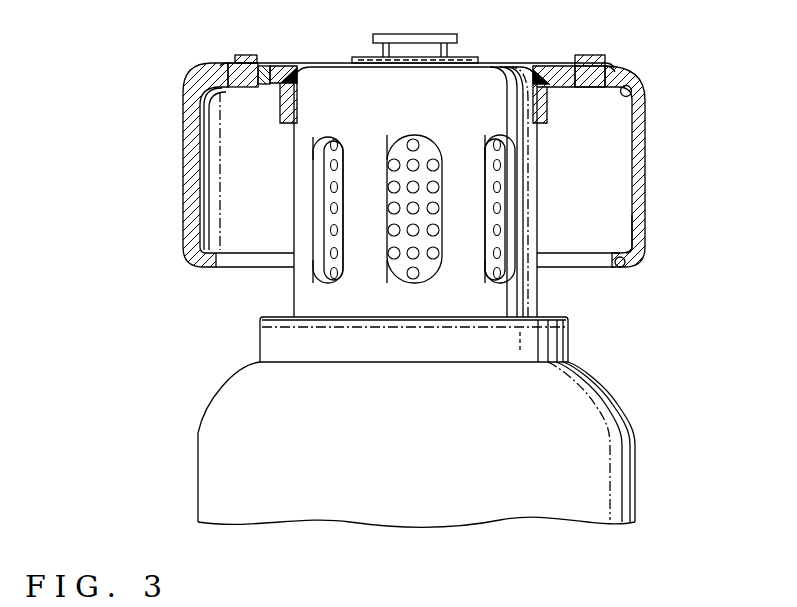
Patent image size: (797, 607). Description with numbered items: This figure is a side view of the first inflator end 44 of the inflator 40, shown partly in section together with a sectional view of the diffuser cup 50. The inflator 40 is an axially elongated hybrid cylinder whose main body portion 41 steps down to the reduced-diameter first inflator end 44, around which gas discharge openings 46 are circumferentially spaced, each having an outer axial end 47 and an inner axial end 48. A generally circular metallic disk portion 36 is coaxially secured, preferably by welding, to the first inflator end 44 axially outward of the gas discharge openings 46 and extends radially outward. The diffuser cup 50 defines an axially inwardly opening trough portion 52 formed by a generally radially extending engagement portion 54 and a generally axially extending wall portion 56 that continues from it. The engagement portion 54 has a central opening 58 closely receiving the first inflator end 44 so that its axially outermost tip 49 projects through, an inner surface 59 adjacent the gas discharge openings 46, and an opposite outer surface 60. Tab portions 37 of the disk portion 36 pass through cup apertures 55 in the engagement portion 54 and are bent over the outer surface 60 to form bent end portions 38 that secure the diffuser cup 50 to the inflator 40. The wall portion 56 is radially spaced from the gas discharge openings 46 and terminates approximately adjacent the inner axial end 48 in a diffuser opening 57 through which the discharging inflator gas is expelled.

The disk portion 36 is at (590, 94).
The tab portions 37 is at (236, 62).
The bent end portions 38 is at (250, 56).
The inflator 40 is at (640, 459).
The main body portion 41 is at (212, 485).
The first inflator end 44 is at (576, 338).
The gas discharge openings 46 is at (500, 240).
The outer axial end 47 is at (495, 137).
The inner axial end 48 is at (497, 283).
The axially outermost tip 49 is at (493, 64).
The diffuser cup 50 is at (657, 170).
The trough portion 52 is at (626, 222).
The engagement portion 54 is at (263, 56).
The cup apertures 55 is at (225, 64).
The wall portion 56 is at (193, 183).
The diffuser opening 57 is at (625, 268).
The central opening 58 is at (262, 78).
The inner surface 59 is at (642, 97).
The outer surface 60 is at (612, 66).